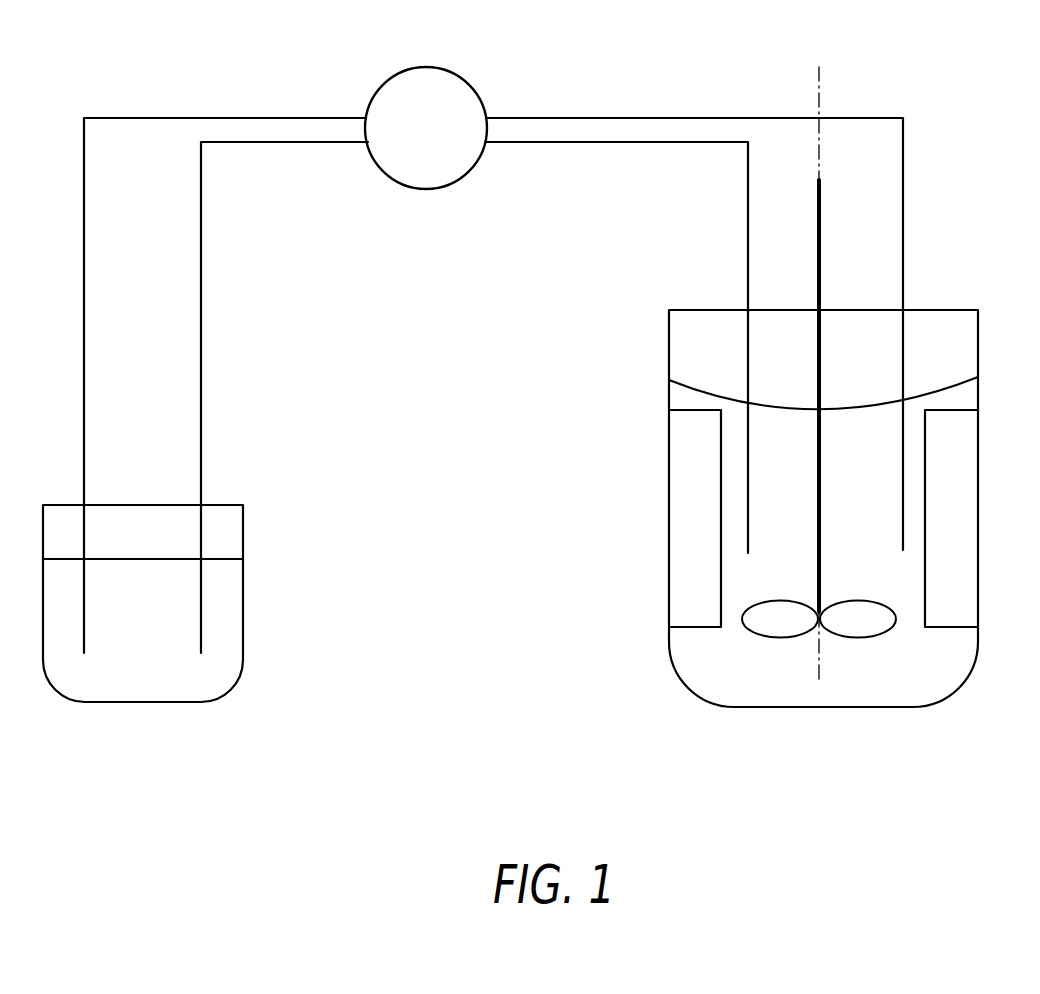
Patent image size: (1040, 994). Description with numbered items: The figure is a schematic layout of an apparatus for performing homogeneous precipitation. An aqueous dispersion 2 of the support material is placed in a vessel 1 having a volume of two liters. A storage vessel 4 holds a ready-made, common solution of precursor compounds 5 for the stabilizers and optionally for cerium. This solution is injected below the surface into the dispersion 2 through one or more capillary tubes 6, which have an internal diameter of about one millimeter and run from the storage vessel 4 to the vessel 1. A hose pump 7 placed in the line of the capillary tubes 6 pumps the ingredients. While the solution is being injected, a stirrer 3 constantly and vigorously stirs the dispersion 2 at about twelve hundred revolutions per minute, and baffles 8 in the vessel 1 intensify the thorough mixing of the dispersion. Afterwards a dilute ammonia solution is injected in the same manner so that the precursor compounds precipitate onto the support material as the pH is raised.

The vessel 1 is at (943, 694).
The aqueous dispersion 2 is at (772, 509).
The stirrer 3 is at (821, 226).
The storage vessel 4 is at (245, 607).
The solution of precursor compounds 5 is at (128, 639).
The capillary tubes 6 is at (221, 143).
The hose pump 7 is at (416, 147).
The baffles 8 is at (963, 515).